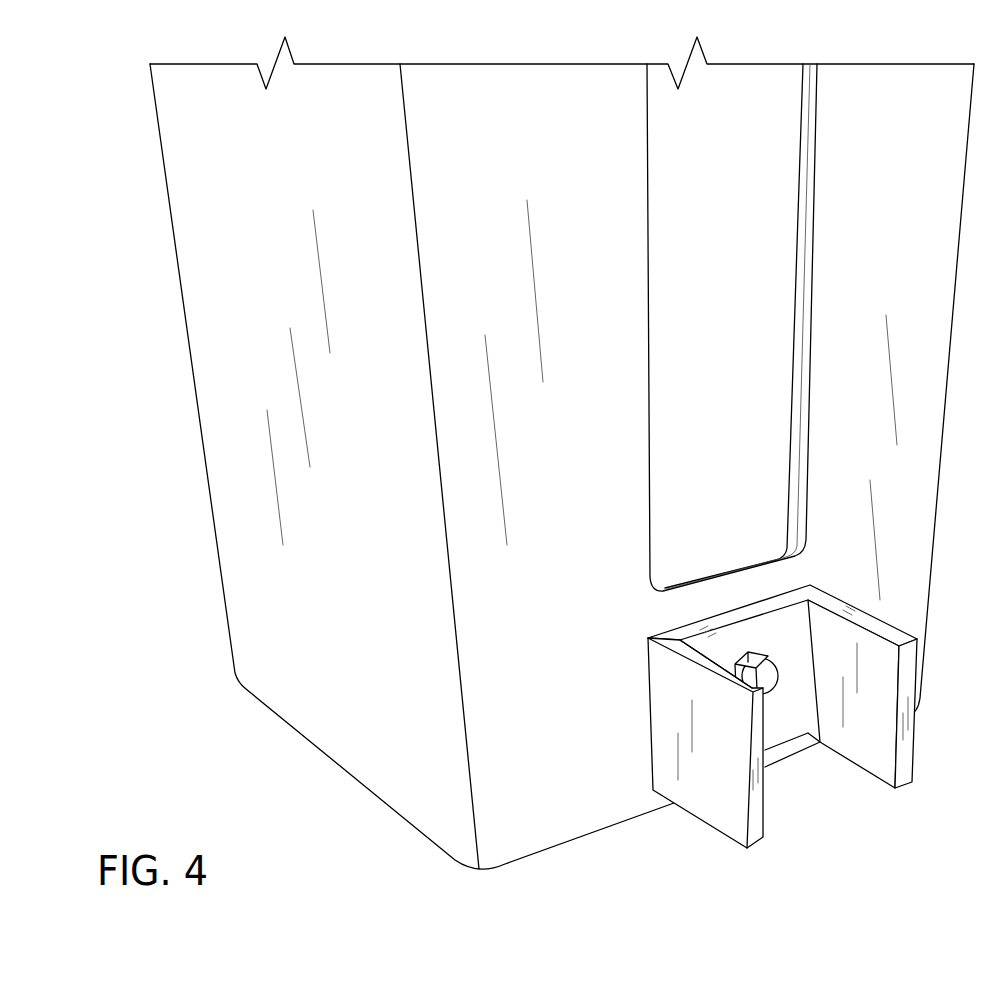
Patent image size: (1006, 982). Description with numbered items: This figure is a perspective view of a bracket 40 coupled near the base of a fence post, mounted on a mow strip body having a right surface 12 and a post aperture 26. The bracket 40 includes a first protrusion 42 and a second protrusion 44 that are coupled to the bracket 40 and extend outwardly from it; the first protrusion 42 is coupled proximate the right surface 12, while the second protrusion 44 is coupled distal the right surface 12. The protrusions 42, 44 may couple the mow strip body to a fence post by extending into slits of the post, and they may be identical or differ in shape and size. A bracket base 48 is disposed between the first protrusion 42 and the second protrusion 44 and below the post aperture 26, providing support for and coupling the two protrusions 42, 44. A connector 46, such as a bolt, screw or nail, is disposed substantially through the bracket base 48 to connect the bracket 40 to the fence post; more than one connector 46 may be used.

The right surface 12 is at (371, 566).
The post aperture 26 is at (648, 255).
The bracket 40 is at (782, 684).
The first protrusion 42 is at (889, 745).
The second protrusion 44 is at (740, 745).
The connector 46 is at (774, 661).
The bracket base 48 is at (677, 632).